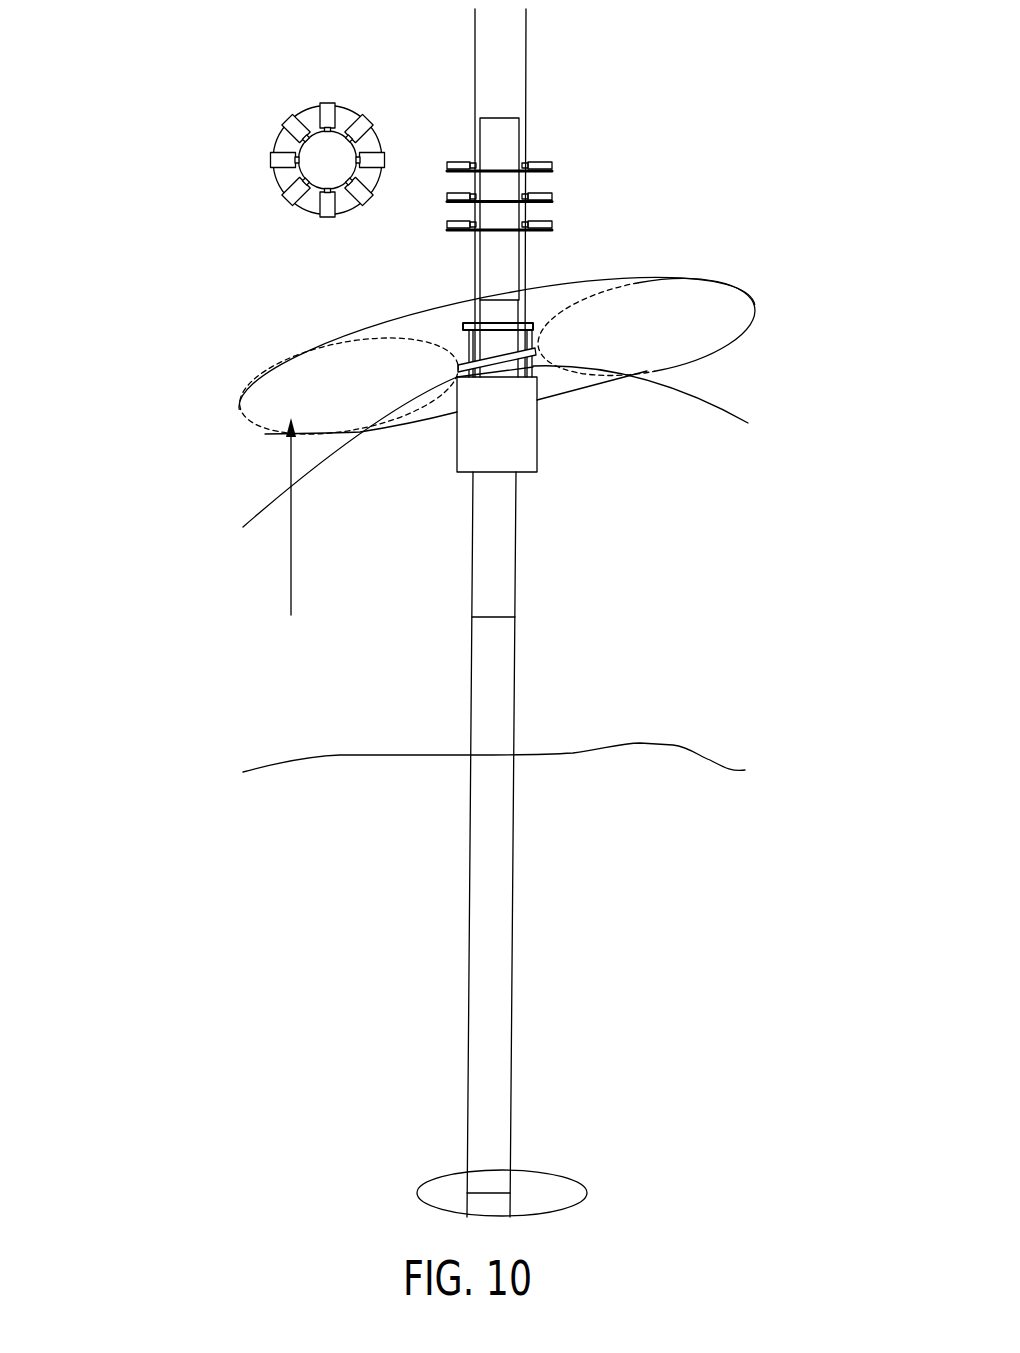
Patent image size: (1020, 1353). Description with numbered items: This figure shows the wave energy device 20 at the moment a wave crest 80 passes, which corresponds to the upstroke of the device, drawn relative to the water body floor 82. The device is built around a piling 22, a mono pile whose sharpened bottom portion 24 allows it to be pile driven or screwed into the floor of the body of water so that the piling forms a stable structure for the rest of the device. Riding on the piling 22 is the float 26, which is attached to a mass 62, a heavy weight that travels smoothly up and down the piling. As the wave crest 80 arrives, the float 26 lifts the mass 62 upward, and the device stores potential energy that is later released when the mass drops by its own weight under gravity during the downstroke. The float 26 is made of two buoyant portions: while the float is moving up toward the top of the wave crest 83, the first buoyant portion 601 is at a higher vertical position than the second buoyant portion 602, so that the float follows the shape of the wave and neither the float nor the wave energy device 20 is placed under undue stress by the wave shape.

The wave energy device 20 is at (168, 62).
The piling 22 is at (511, 57).
The sharpened bottom portion 24 is at (447, 1190).
The float 26 is at (568, 293).
The first buoyant portion 601 is at (693, 300).
The second buoyant portion 602 is at (287, 385).
The mass 62 is at (540, 373).
The wave crest 80 is at (727, 407).
The water body floor 82 is at (673, 745).
The top of the wave crest 83 is at (290, 548).